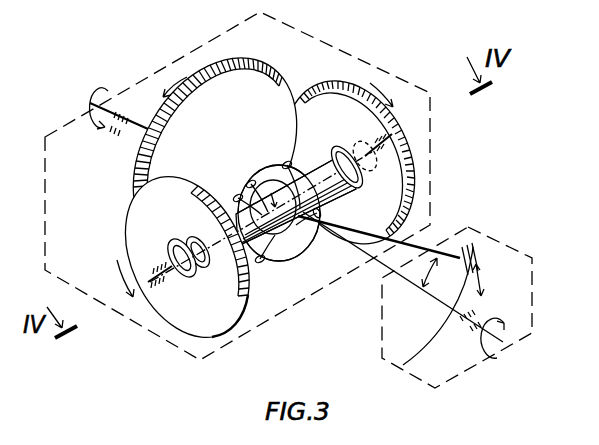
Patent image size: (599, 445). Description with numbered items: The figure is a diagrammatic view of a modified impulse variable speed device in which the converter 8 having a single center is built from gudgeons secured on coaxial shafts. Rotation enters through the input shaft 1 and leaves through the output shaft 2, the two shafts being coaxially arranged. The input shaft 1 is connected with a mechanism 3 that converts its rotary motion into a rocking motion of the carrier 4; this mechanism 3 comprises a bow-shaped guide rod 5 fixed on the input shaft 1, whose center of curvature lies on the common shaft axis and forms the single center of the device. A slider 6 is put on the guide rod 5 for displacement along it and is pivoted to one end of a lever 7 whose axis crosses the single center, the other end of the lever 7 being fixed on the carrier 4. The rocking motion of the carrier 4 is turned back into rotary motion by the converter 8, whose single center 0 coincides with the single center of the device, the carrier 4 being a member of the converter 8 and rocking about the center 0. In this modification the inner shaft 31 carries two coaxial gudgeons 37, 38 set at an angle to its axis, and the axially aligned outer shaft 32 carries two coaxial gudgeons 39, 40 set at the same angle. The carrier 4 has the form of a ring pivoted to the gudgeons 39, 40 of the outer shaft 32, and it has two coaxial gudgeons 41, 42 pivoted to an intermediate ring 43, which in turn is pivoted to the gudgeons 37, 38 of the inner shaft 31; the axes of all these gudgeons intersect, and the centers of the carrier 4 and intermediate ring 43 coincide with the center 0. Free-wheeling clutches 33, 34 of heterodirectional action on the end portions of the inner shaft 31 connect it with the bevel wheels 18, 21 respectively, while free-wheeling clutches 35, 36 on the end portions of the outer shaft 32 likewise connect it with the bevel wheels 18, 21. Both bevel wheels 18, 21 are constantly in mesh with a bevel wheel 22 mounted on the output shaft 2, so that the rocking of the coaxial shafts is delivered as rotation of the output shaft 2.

The single center 0 is at (270, 191).
The input shaft 1 is at (493, 350).
The output shaft 2 is at (100, 90).
The mechanism for converting rotary motion into rocking motion 3 is at (541, 285).
The carrier 4 is at (318, 240).
The bow-shaped guide rod 5 is at (423, 347).
The slider 6 is at (480, 244).
The lever 7 is at (432, 247).
The converter having a single center 8 is at (123, 326).
The bevel wheel 18 is at (163, 307).
The bevel wheel 21 is at (407, 146).
The bevel wheel 22 is at (147, 147).
The inner shaft 31 is at (182, 243).
The outer shaft 32 is at (312, 172).
The free-wheeling clutch 33 is at (185, 283).
The free-wheeling clutch 34 is at (360, 178).
The free-wheeling clutch 35 is at (202, 268).
The free-wheeling clutch 36 is at (345, 145).
The gudgeon 37 is at (286, 161).
The gudgeon 38 is at (271, 262).
The gudgeon 39 is at (250, 181).
The gudgeon 40 is at (285, 258).
The gudgeon 41 is at (315, 220).
The gudgeon 42 is at (236, 195).
The intermediate ring 43 is at (262, 263).